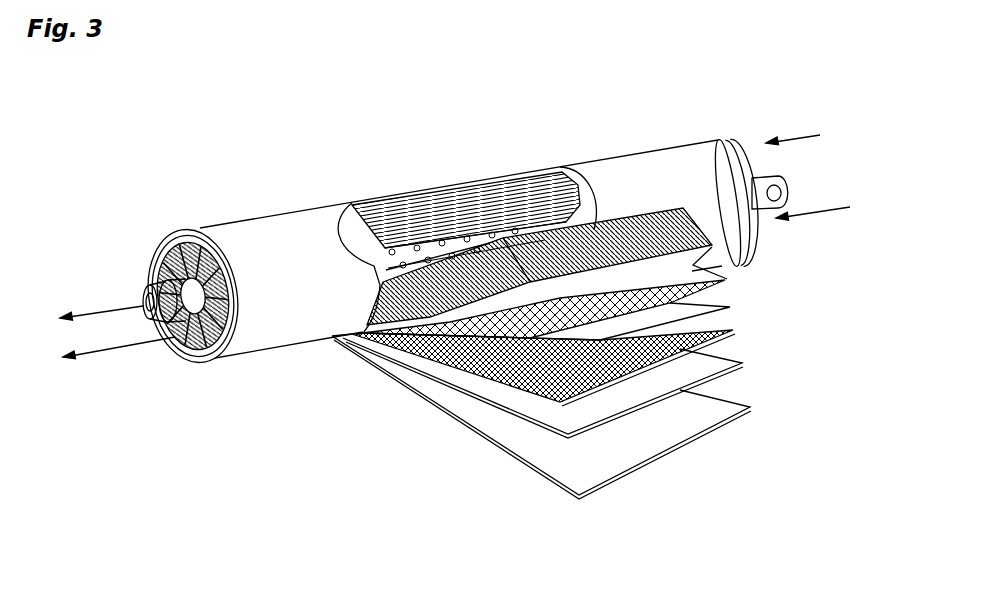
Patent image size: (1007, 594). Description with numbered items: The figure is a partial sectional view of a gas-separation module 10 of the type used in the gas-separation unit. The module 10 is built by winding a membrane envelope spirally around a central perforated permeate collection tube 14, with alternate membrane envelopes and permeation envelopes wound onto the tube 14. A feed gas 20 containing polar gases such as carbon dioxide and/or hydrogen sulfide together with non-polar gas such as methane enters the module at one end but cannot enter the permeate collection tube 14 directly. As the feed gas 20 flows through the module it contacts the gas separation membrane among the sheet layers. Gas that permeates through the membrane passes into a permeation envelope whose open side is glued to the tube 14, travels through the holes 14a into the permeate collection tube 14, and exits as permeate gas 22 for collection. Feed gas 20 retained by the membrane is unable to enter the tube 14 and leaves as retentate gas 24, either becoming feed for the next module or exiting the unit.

The gas-separation module 10 is at (623, 123).
The permeate collection tube 14 is at (530, 222).
The holes 14a is at (385, 258).
The feed gas 20 is at (804, 135).
The permeate gas 22 is at (101, 298).
The retentate gas 24 is at (119, 366).